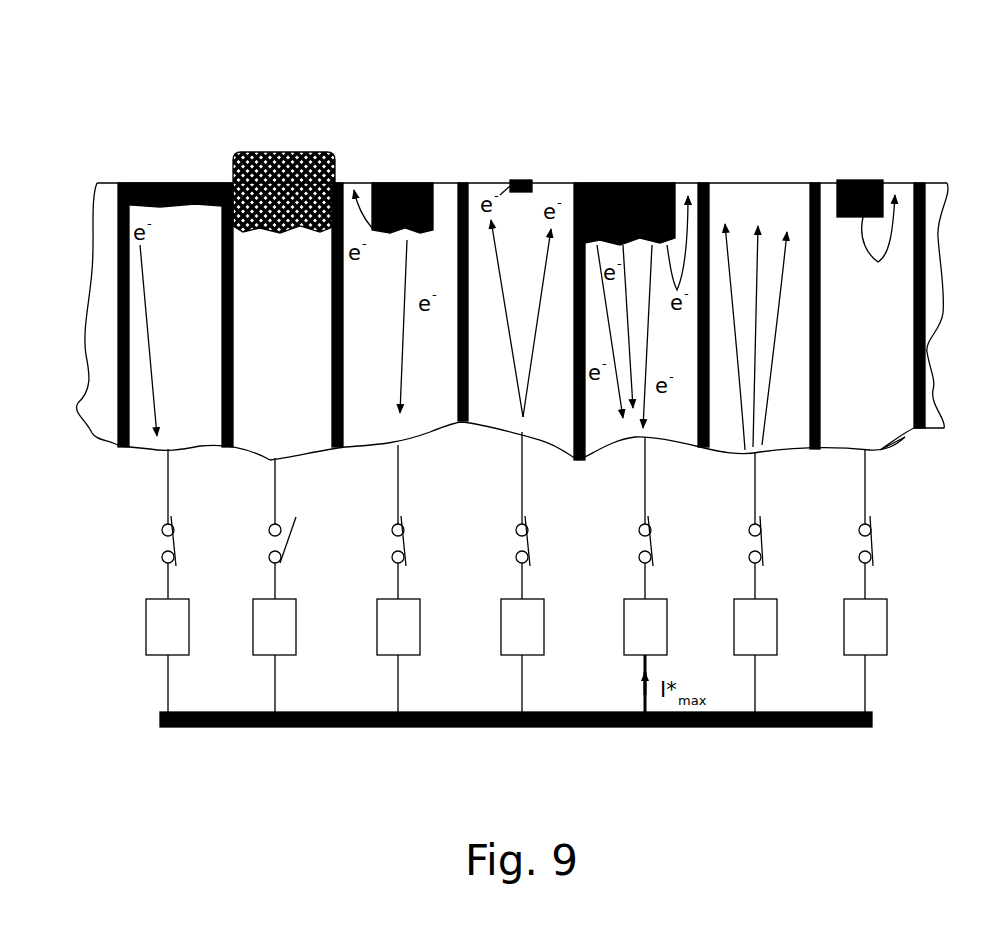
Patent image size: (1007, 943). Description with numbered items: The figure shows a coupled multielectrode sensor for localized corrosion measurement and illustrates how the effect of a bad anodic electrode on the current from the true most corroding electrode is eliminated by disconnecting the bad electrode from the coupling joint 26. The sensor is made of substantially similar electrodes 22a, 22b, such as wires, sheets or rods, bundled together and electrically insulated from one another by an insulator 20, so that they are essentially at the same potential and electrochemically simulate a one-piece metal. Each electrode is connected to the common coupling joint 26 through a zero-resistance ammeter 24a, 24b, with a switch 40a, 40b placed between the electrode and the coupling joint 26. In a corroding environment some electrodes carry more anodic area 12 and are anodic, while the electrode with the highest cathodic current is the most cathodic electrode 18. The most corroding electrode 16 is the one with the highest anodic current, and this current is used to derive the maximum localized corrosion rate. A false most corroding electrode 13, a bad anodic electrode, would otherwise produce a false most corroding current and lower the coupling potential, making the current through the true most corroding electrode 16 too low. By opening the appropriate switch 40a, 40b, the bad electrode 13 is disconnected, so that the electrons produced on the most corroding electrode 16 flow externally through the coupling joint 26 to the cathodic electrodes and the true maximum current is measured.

The anodic area 12 is at (150, 180).
The false most corroding electrode 13 is at (282, 152).
The most corroding electrode 16 is at (648, 165).
The most cathodic electrode 18 is at (756, 165).
The insulator 20 is at (922, 182).
The electrode 22a is at (142, 448).
The electrode 22b is at (897, 443).
The zero-resistance ammeter 24a is at (147, 640).
The zero-resistance ammeter 24b is at (893, 625).
The coupling joint 26 is at (593, 728).
The switch 40a is at (158, 540).
The switch 40b is at (880, 540).